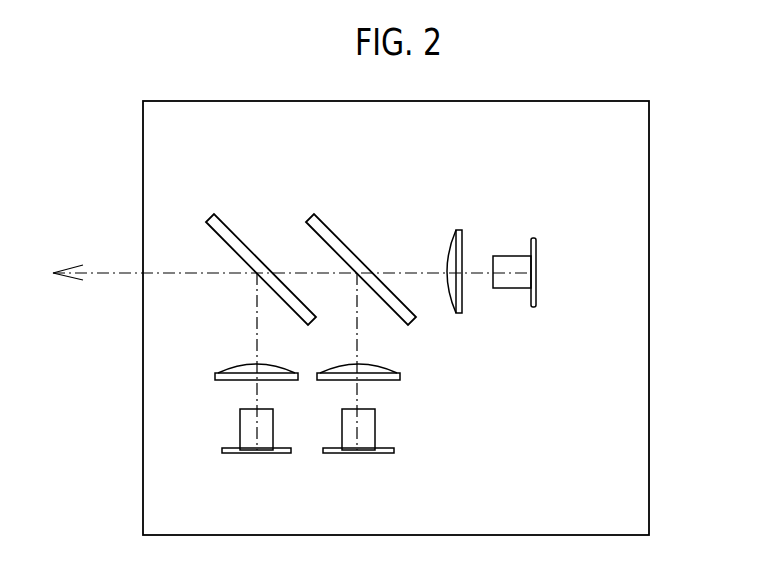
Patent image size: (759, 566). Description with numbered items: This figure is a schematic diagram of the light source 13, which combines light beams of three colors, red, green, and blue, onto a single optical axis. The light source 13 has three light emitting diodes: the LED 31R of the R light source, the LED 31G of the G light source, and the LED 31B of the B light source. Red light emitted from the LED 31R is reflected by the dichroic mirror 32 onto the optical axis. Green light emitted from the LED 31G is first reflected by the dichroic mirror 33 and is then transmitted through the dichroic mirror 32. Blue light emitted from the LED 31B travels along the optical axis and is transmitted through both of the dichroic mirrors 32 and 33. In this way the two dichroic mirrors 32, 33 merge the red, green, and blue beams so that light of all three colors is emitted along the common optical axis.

The light source 13 is at (649, 153).
The light emitting diode (B light source) 31B is at (508, 256).
The light emitting diode (R light source) 31R is at (240, 428).
The light emitting diode (G light source) 31G is at (375, 433).
The dichroic mirror 32 is at (228, 225).
The dichroic mirror 33 is at (326, 225).